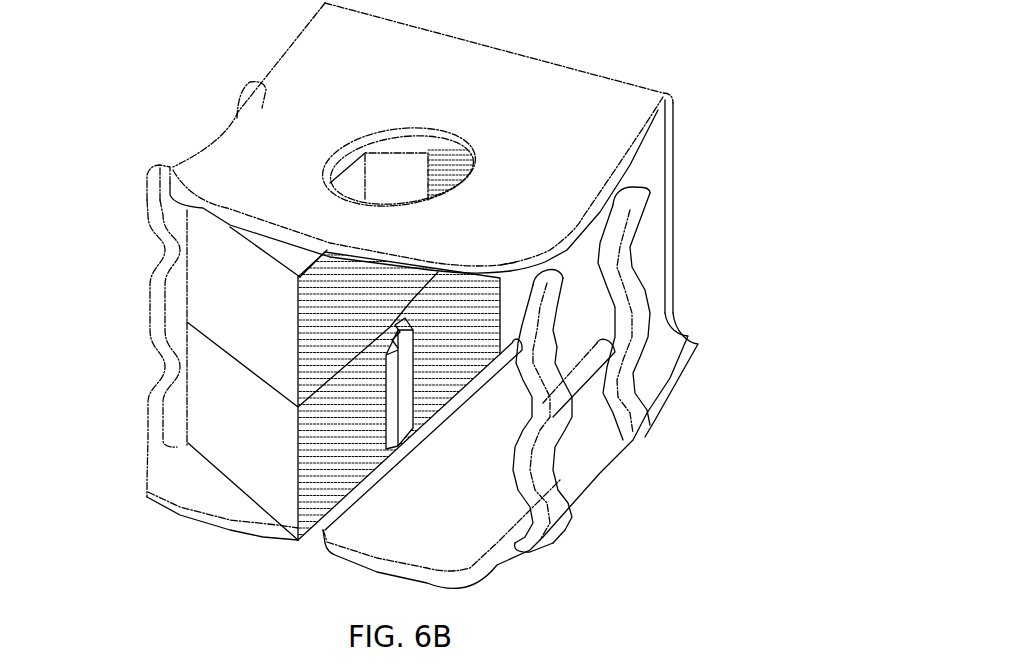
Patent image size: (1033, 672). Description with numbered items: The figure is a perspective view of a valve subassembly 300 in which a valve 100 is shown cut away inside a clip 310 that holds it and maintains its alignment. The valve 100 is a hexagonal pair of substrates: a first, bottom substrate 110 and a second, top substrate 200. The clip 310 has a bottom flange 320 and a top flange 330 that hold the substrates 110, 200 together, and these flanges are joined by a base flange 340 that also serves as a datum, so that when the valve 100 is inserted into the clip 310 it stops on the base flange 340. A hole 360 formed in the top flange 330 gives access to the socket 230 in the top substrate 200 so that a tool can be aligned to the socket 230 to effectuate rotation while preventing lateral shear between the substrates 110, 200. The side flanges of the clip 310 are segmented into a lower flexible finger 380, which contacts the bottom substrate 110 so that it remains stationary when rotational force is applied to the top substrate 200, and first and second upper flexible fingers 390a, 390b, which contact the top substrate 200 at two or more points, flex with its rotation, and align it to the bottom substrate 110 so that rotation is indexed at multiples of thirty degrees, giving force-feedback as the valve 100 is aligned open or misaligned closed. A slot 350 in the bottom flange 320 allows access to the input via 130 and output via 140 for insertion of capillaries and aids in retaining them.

The valve 100 is at (200, 452).
The first substrate 110 is at (200, 390).
The input via 130 is at (383, 410).
The output via 140 is at (413, 380).
The second substrate 200 is at (202, 280).
The socket 230 is at (383, 178).
The valve subassembly 300 is at (720, 100).
The clip 310 is at (597, 72).
The bottom flange 320 is at (460, 543).
The top flange 330 is at (315, 68).
The base flange 340 is at (647, 152).
The slot 350 is at (322, 528).
The hole 360 is at (330, 152).
The lower flexible finger 380 is at (597, 475).
The first upper flexible finger 390a is at (555, 517).
The second upper flexible finger 390b is at (640, 433).